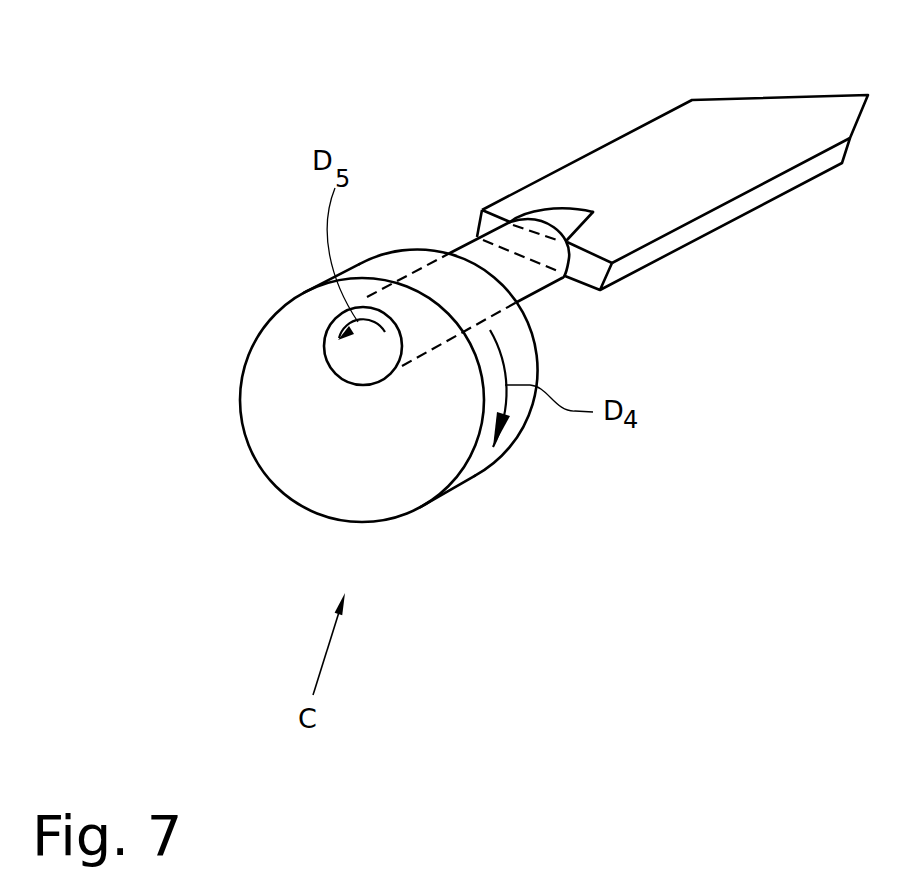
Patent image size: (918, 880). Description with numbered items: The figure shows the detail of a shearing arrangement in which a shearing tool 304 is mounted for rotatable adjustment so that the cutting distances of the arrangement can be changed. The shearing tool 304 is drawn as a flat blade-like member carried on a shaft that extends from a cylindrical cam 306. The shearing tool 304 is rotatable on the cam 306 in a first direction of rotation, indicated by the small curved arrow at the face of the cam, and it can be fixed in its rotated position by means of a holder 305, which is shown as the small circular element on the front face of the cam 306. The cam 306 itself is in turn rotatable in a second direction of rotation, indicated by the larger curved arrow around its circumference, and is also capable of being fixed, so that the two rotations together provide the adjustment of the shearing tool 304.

The shearing tool 304 is at (743, 123).
The holder 305 is at (355, 363).
The cam 306 is at (307, 470).